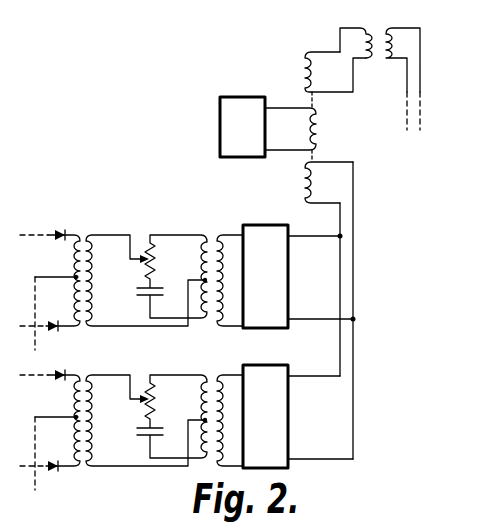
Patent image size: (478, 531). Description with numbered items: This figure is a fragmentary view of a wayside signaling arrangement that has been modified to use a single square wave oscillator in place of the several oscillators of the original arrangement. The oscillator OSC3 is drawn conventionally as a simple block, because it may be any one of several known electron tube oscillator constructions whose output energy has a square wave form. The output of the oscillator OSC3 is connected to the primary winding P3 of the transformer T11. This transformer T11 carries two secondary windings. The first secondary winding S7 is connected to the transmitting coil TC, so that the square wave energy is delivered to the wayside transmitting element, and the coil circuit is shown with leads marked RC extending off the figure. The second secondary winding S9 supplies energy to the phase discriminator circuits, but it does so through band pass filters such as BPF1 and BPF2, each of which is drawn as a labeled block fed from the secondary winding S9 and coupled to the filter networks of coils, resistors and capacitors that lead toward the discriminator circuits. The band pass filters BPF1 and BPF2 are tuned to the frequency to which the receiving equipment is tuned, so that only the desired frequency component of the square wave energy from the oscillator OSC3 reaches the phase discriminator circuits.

The transformer T11 is at (331, 41).
The first secondary winding S7 is at (335, 72).
The transmitting coil TC is at (389, 60).
The relay coil RC is at (392, 60).
The oscillator OSC3 is at (200, 92).
The primary winding P3 is at (290, 121).
The second secondary winding S9 is at (329, 176).
The band pass filter BPF1 is at (248, 212).
The band pass filter BPF2 is at (308, 356).